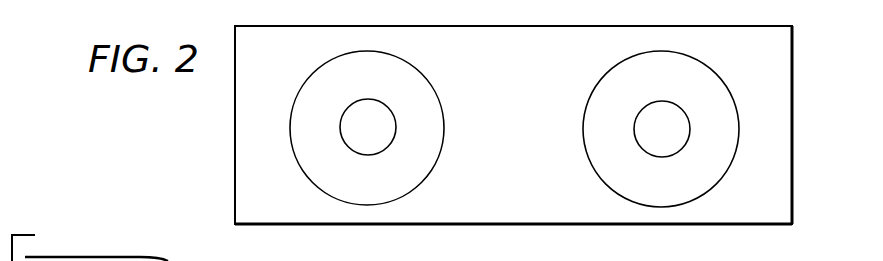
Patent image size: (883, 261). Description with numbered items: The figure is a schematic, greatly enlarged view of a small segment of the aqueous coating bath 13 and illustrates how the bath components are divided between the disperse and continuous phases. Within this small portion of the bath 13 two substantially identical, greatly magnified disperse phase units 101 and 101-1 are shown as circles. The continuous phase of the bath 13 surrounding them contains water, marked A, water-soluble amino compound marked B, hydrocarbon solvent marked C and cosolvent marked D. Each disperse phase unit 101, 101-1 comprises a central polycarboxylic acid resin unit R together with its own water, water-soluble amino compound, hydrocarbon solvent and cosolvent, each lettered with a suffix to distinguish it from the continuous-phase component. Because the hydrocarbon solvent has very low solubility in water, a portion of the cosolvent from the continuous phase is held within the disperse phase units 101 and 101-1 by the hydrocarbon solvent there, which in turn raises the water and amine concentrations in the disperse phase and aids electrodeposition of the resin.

The aqueous coating bath 13 is at (513, 125).
The disperse phase unit 101 is at (738, 108).
The disperse phase unit 101-1 is at (289, 118).